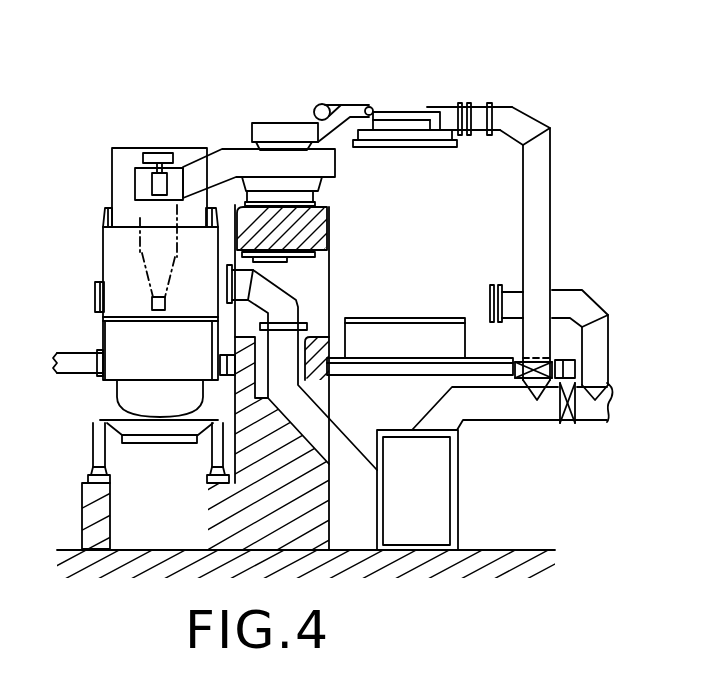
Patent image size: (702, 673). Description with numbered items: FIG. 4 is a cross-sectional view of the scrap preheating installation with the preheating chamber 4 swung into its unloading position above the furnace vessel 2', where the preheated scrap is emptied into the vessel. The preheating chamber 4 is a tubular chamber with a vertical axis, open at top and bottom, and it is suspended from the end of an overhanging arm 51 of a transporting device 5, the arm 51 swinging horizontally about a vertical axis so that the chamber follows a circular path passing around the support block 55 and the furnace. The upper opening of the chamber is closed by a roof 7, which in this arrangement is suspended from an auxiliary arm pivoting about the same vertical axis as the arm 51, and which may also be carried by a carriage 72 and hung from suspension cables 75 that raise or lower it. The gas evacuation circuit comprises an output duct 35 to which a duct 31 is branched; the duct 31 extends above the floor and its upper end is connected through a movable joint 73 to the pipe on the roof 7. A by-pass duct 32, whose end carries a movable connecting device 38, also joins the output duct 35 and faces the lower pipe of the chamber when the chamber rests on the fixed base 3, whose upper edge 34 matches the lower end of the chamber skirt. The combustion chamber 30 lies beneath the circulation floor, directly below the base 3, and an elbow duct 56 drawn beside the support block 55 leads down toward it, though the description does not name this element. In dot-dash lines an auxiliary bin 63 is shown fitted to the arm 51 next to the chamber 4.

The furnace vessel 2' is at (141, 453).
The fixed base 3 is at (371, 328).
The preheating chamber 4 is at (91, 250).
The transporting device 5 is at (229, 126).
The roof 7 is at (440, 147).
The combustion chamber 30 is at (458, 500).
The duct 31 is at (542, 218).
The by-pass duct 32 is at (563, 292).
The upper edge 34 is at (418, 318).
The output duct 35 is at (503, 410).
The movable connecting device 38 is at (490, 290).
The overhanging arm 51 is at (193, 162).
The support block 55 is at (328, 218).
The elbow duct 56 is at (303, 390).
The auxiliary bin 63 is at (140, 218).
The carriage 72 is at (490, 103).
The movable joint 73 is at (469, 103).
The suspension cables 75 is at (392, 110).